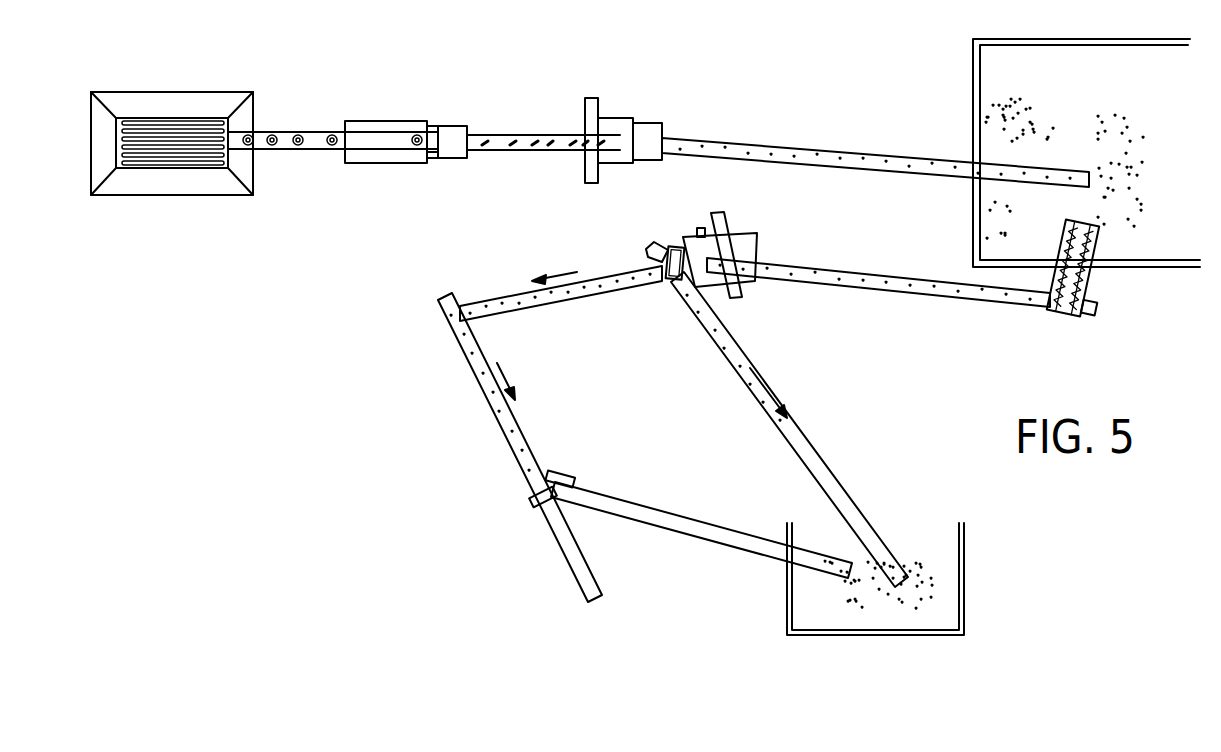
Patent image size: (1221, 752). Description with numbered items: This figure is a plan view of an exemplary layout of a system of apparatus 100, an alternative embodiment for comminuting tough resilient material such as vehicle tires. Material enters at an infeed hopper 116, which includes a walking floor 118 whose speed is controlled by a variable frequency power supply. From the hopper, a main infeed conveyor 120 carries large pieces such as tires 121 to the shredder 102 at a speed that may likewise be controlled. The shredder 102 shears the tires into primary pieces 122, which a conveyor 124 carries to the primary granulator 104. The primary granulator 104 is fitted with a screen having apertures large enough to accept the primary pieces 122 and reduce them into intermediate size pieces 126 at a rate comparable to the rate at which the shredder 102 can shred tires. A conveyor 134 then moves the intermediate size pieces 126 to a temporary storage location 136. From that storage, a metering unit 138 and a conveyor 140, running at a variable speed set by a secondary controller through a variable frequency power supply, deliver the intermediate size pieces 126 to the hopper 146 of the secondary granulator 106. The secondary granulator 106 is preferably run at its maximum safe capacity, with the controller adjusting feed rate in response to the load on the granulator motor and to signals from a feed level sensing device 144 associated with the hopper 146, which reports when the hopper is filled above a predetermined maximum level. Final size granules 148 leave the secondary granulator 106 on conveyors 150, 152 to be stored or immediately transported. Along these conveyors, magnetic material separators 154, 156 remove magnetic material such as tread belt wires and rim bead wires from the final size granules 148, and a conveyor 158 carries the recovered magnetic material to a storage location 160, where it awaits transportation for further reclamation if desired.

The system of apparatus 100 is at (186, 312).
The shredder 102 is at (456, 121).
The primary granulator 104 is at (660, 125).
The secondary granulator 106 is at (738, 236).
The infeed hopper 116 is at (250, 92).
The walking floor 118 is at (172, 118).
The main infeed conveyor 120 is at (280, 134).
The tires 121 is at (300, 148).
The primary pieces 122 is at (525, 140).
The conveyor 124 is at (555, 145).
The intermediate size pieces 126 is at (708, 152).
The conveyor 134 is at (907, 157).
The temporary storage location 136 is at (1130, 140).
The metering unit 138 is at (1090, 273).
The conveyor 140 is at (915, 292).
The feed level sensing device 144 is at (700, 228).
The hopper 146 is at (688, 237).
The final size granules 148 is at (587, 288).
The conveyor 150 is at (537, 298).
The conveyor 152 is at (570, 565).
The magnetic material separator 154 is at (672, 273).
The magnetic material separator 156 is at (532, 498).
The conveyor 158 is at (716, 526).
The storage location 160 is at (915, 550).